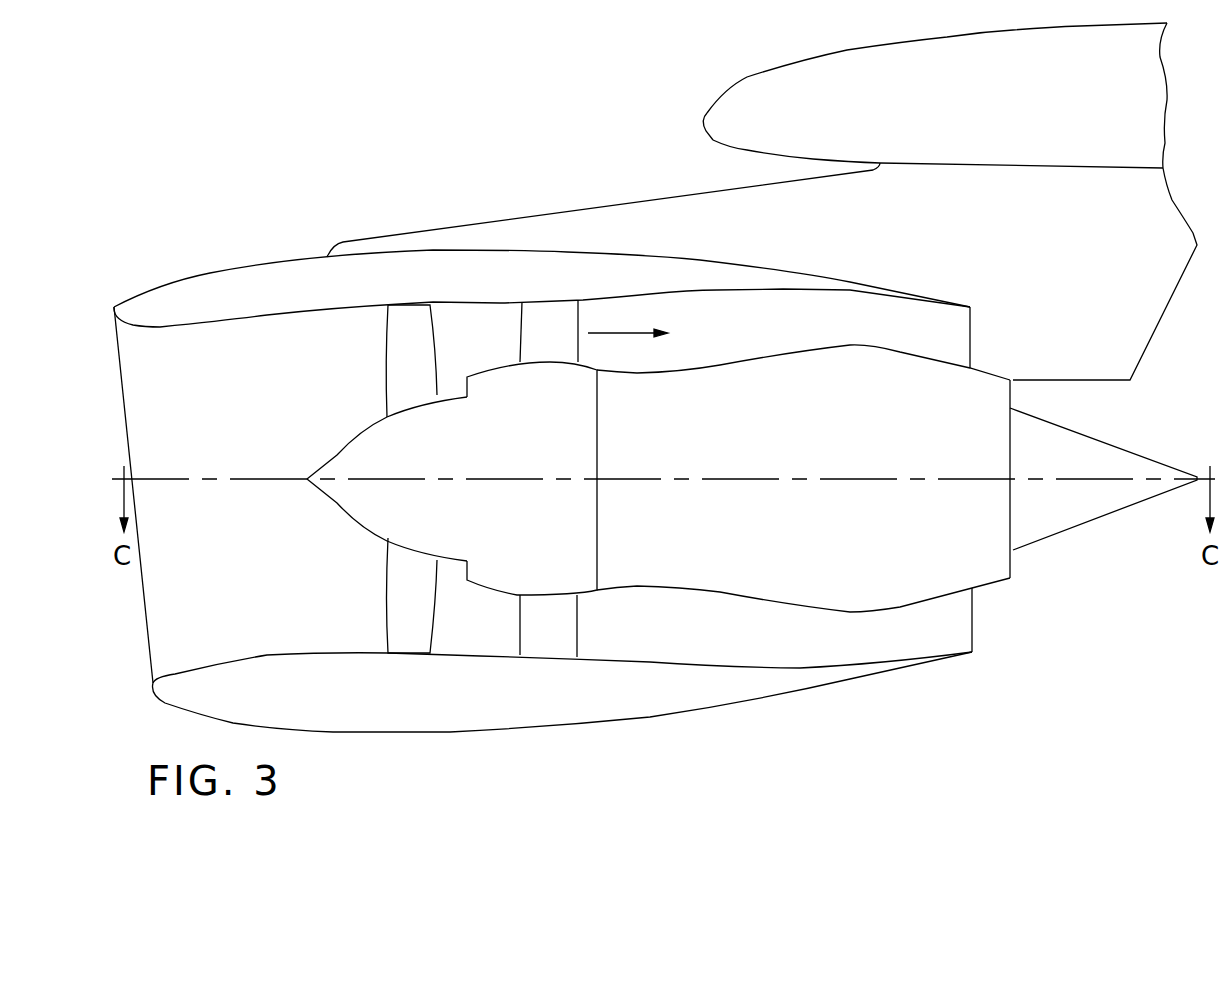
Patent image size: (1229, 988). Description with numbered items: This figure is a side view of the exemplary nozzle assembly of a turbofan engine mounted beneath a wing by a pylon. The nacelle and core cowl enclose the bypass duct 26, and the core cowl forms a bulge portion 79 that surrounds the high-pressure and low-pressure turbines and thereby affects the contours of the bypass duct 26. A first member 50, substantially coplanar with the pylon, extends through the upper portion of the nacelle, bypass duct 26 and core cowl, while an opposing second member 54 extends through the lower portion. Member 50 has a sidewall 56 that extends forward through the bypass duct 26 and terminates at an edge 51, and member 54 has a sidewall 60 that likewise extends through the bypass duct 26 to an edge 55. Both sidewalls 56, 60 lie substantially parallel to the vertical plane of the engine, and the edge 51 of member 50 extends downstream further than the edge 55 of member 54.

The bypass duct 26 is at (631, 330).
The first member 50 is at (707, 312).
The edge 51 is at (972, 347).
The second member 54 is at (672, 628).
The edge 55 is at (972, 623).
The sidewall 56 is at (731, 345).
The sidewall 60 is at (867, 651).
The bulge portion 79 is at (858, 338).